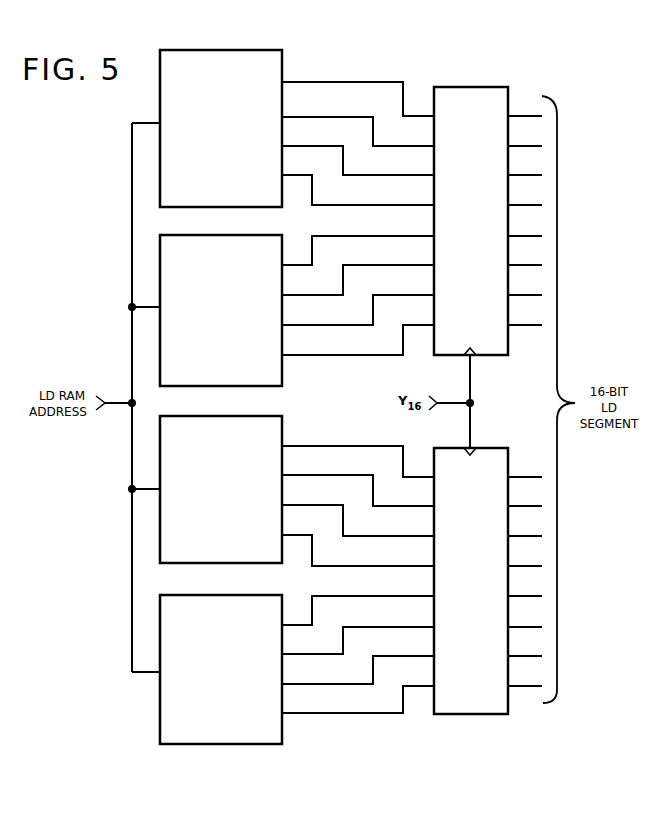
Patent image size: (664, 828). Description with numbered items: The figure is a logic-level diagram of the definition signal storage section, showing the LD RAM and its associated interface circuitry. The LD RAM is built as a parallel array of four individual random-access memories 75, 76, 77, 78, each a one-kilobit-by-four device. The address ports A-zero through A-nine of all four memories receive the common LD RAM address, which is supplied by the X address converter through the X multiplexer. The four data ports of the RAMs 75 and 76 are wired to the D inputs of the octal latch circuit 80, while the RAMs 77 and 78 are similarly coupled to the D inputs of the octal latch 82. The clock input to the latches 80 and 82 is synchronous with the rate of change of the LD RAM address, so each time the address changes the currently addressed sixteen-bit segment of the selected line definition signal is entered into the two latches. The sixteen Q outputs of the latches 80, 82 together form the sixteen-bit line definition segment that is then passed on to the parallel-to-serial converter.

The random-access memory 75 is at (282, 60).
The random-access memory 76 is at (283, 374).
The random-access memory 77 is at (283, 430).
The random-access memory 78 is at (282, 732).
The octal latch circuit 80 is at (470, 87).
The octal latch 82 is at (470, 714).